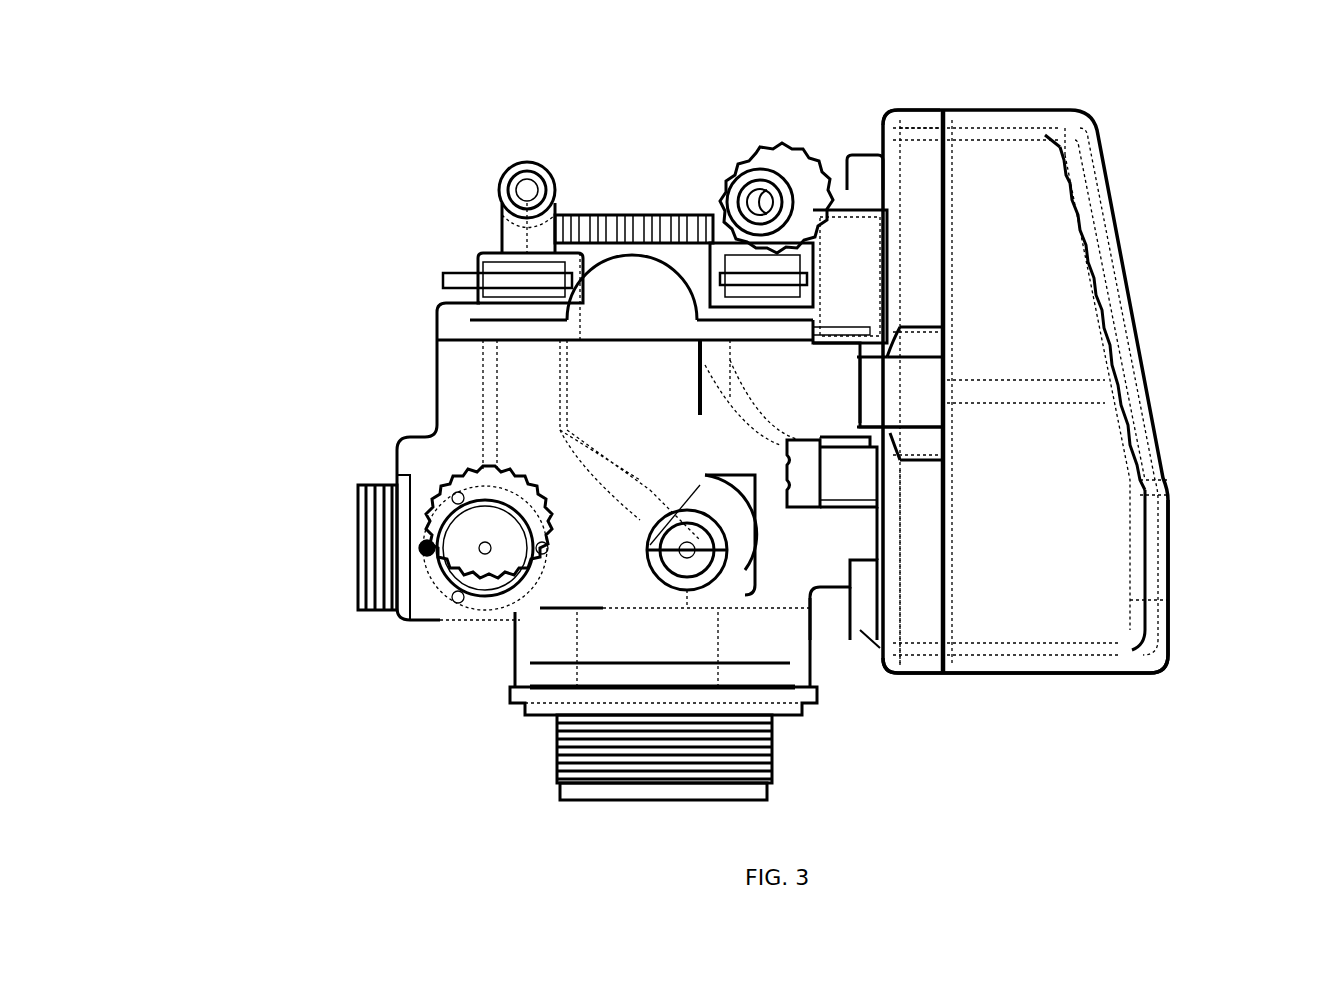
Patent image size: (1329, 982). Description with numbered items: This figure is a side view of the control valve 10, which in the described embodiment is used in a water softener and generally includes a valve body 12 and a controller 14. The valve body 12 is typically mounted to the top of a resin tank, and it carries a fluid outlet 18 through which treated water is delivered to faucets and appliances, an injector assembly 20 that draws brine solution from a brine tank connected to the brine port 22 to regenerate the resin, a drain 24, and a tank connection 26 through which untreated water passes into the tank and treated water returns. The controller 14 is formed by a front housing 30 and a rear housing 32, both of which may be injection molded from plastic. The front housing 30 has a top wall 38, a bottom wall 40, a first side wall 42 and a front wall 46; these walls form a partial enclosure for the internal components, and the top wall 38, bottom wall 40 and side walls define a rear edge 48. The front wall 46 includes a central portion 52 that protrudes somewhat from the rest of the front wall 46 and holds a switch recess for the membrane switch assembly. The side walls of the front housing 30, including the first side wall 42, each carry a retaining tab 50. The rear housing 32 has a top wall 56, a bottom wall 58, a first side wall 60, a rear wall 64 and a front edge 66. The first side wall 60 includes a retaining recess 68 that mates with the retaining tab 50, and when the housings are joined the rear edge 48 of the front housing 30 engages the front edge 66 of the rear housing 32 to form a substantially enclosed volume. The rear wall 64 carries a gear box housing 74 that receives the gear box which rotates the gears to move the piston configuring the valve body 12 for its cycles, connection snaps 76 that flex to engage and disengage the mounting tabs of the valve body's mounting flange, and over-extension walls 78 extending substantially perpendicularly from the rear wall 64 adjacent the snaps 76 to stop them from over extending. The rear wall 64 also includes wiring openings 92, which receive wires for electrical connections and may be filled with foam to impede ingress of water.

The control valve 10 is at (183, 207).
The valve body 12 is at (373, 368).
The controller 14 is at (1195, 395).
The fluid outlet 18 is at (358, 538).
The injector assembly 20 is at (640, 215).
The brine port 22 is at (522, 160).
The drain 24 is at (740, 160).
The tank connection 26 is at (557, 760).
The front housing 30 is at (1040, 695).
The rear housing 32 is at (915, 695).
The top wall 38 is at (1013, 110).
The bottom wall 40 is at (1072, 675).
The first side wall 42 is at (1048, 255).
The front wall 46 is at (1145, 533).
The rear edge 48 is at (942, 505).
The retaining tab 50 is at (915, 368).
The central portion 52 is at (1168, 590).
The top wall 56 is at (938, 110).
The bottom wall 58 is at (908, 678).
The first side wall 60 is at (923, 243).
The rear wall 64 is at (880, 132).
The front edge 66 is at (940, 580).
The retaining recess 68 is at (930, 340).
The gear box housing 74 is at (863, 281).
The connection snaps 76 is at (803, 450).
The over-extension walls 78 is at (845, 475).
The wiring openings 92 is at (860, 604).